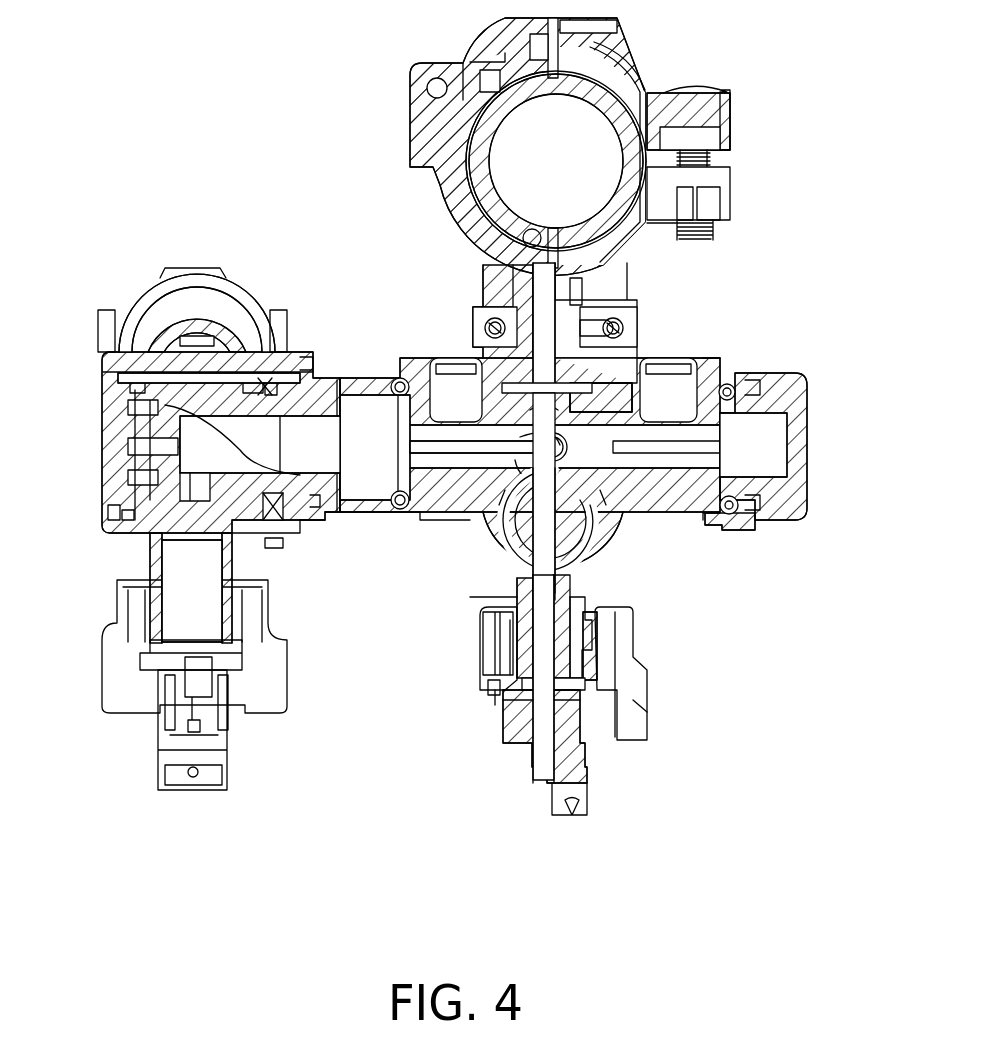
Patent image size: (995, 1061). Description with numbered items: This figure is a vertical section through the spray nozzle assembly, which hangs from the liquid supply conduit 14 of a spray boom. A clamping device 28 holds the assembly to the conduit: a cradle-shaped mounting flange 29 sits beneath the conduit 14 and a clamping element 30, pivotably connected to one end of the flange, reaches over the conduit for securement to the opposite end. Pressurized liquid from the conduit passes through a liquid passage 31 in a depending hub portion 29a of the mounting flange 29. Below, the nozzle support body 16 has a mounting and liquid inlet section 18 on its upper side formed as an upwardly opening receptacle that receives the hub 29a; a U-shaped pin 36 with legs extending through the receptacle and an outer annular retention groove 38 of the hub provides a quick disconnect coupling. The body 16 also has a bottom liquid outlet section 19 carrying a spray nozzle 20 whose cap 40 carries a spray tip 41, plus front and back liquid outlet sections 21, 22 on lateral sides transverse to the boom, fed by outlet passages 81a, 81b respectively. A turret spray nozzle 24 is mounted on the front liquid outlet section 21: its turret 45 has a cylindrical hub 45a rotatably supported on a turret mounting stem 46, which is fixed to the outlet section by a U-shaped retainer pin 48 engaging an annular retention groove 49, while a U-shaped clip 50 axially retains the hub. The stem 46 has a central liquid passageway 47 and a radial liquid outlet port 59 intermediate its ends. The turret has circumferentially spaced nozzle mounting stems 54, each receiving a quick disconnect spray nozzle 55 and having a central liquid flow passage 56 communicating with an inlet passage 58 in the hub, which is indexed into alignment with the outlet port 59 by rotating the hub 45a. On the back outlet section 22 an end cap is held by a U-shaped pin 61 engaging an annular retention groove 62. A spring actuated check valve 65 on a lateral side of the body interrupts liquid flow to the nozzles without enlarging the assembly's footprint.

The liquid supply conduit 14 is at (625, 118).
The nozzle support body 16 is at (528, 431).
The mounting and liquid inlet section 18 is at (547, 291).
The bottom liquid outlet section 19 is at (480, 605).
The spray nozzle 20 is at (568, 708).
The front liquid outlet section 21 is at (410, 512).
The back liquid outlet section 22 is at (690, 515).
The turret spray nozzle 24 is at (193, 422).
The clamping device 28 is at (533, 144).
The cradle-shaped mounting flange 29 is at (430, 185).
The depending hub portion 29a is at (508, 292).
The clamping element 30 is at (487, 58).
The liquid passage 31 is at (552, 298).
The U-shaped pin 36 is at (622, 325).
The outer annular retention groove 38 is at (485, 327).
The cap 40 is at (485, 670).
The spray tip 41 is at (590, 790).
The turret 45 is at (265, 545).
The cylindrical hub 45a is at (203, 362).
The turret mounting stem 46 is at (197, 397).
The central liquid passageway 47 is at (240, 473).
The U-shaped retainer pin 48 is at (405, 380).
The annular retention groove 49 is at (410, 497).
The U-shaped clip 50 is at (303, 352).
The nozzle mounting stem 54 is at (150, 548).
The quick disconnect spray nozzle 55 is at (189, 660).
The central liquid flow passage 56 is at (205, 630).
The inlet passage 58 is at (195, 530).
The radial liquid outlet port 59 is at (118, 497).
The U-shaped pin 61 is at (735, 392).
The annular retention groove 62 is at (740, 492).
The check valve 65 is at (778, 442).
The outlet passage 81a is at (443, 467).
The outlet passage 81b is at (712, 442).